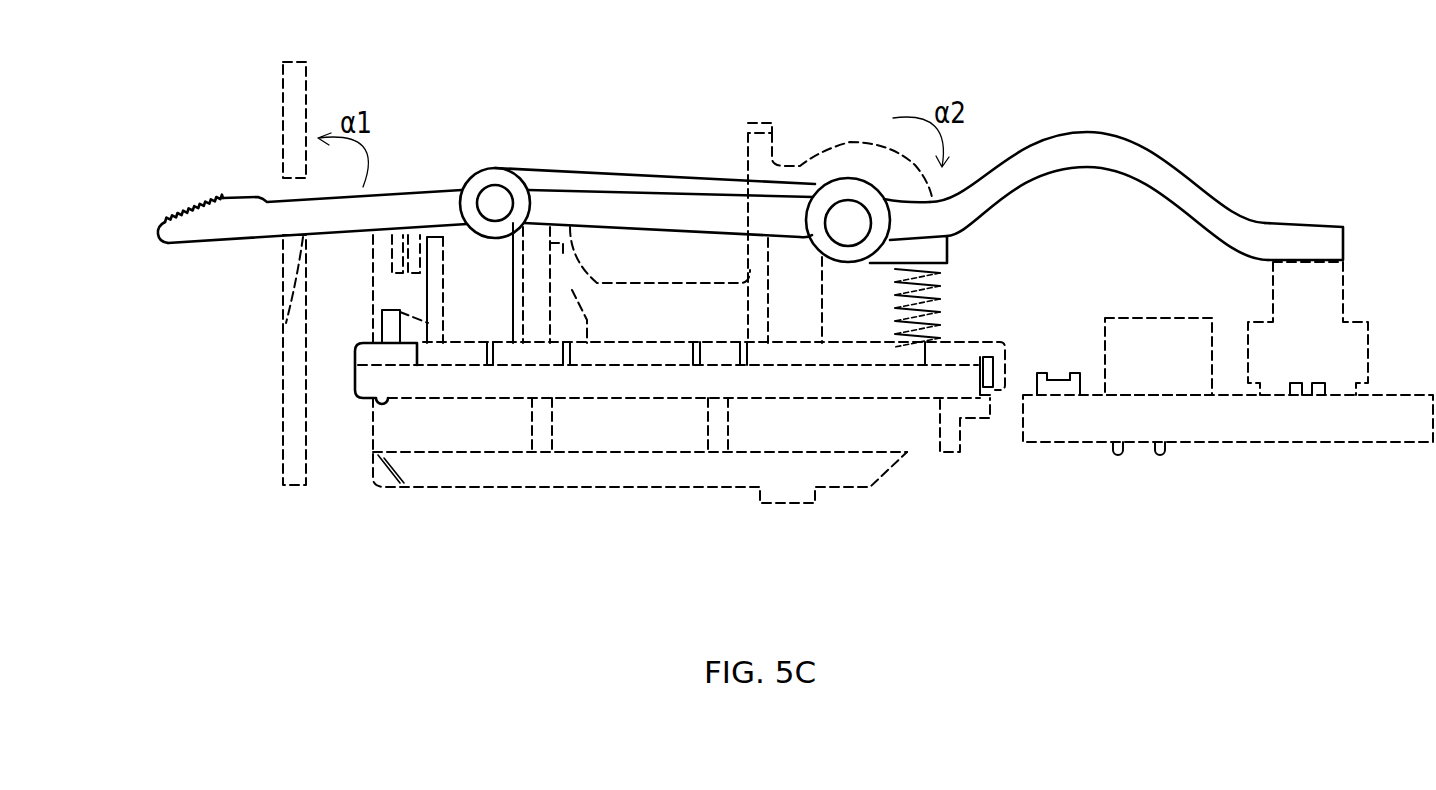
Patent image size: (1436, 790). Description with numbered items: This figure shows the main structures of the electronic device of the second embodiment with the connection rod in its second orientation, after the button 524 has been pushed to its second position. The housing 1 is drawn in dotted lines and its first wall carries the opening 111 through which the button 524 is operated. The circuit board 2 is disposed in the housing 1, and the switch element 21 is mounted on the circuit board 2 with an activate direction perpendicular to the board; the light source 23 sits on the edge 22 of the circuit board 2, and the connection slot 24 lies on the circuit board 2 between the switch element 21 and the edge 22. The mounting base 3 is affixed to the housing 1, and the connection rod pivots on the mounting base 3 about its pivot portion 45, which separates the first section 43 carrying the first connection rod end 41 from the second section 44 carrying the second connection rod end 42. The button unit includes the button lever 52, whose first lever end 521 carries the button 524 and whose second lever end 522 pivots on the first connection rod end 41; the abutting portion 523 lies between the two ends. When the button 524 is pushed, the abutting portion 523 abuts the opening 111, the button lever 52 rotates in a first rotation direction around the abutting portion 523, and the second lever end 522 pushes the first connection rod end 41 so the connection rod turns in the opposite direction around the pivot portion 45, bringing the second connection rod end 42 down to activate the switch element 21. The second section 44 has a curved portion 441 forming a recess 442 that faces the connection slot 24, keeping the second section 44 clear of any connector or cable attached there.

The housing 1 is at (290, 422).
The opening 111 is at (282, 324).
The circuit board 2 is at (1228, 393).
The switch element 21 is at (1320, 287).
The edge 22 is at (1055, 396).
The light source 23 is at (1060, 390).
The connection slot 24 is at (1153, 350).
The mounting base 3 is at (613, 468).
The first connection rod end 41 is at (580, 204).
The second connection rod end 42 is at (1310, 224).
The first section 43 is at (685, 210).
The second section 44 is at (1136, 165).
The curved portion 441 is at (1100, 132).
The recess 442 is at (1089, 168).
The pivot portion 45 is at (850, 217).
The button lever 52 is at (267, 216).
The first lever end 521 is at (158, 231).
The second lever end 522 is at (492, 169).
The abutting portion 523 is at (290, 234).
The button 524 is at (240, 197).